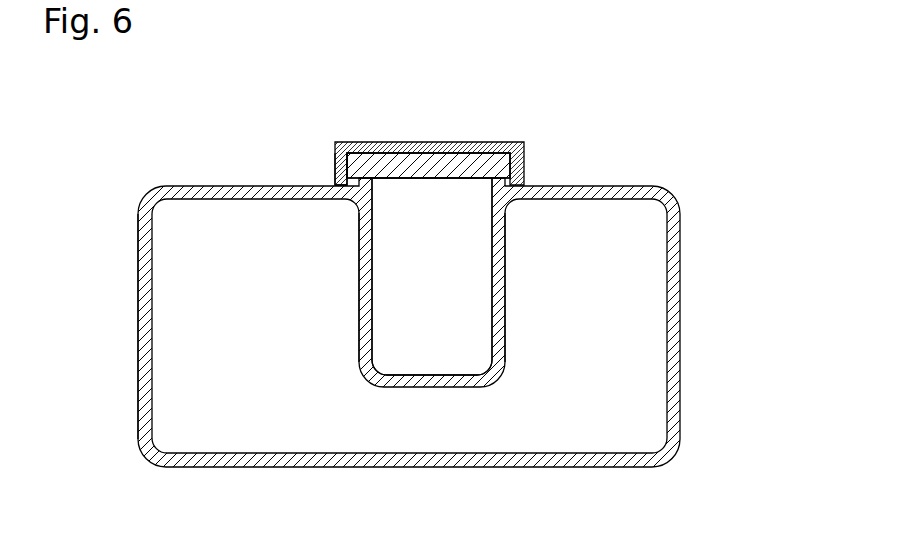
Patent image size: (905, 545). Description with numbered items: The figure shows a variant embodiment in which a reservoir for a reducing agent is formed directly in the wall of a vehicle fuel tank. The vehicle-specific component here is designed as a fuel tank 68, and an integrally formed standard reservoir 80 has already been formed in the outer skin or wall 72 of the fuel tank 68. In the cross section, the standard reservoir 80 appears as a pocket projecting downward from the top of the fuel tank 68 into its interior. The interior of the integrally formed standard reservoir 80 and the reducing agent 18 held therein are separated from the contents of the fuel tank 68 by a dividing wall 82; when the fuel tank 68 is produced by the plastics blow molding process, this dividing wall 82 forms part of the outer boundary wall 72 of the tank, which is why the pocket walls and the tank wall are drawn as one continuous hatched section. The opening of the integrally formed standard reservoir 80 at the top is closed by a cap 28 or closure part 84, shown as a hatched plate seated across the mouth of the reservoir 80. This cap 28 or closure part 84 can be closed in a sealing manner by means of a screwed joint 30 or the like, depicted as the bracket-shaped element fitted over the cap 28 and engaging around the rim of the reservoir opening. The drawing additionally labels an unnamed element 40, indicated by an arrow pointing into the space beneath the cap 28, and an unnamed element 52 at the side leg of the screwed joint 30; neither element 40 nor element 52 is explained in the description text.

The reducing agent 18 is at (446, 323).
The cap 28 is at (410, 160).
The screwed joint 30 is at (335, 143).
The opening 40 is at (476, 204).
The cap leg 52 is at (343, 167).
The fuel tank 68 is at (688, 312).
The outer skin or wall 72 is at (140, 359).
The integrally formed standard reservoir 80 is at (514, 288).
The dividing wall 82 is at (362, 272).
The closure part 84 is at (410, 160).